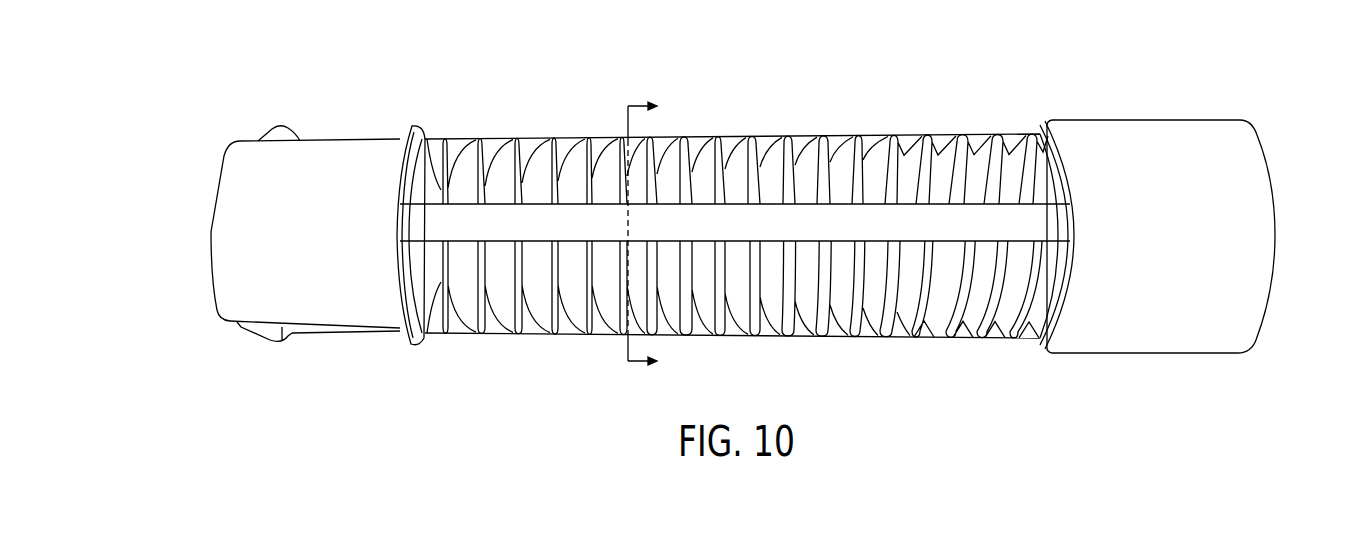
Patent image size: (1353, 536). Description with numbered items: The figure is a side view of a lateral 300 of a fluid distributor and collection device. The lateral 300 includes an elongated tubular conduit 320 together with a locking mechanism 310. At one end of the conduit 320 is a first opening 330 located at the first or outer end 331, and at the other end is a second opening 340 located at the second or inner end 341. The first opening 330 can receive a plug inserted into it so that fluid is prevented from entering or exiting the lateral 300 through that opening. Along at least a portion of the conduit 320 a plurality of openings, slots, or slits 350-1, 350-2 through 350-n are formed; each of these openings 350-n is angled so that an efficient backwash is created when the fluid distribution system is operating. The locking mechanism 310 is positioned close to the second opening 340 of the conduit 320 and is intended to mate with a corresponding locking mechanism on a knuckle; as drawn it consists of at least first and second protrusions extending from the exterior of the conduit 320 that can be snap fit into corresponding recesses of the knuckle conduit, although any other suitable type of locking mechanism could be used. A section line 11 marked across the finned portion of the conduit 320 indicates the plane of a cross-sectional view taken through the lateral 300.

The lateral 300 is at (522, 43).
The locking mechanism 310 is at (275, 125).
The elongated tubular conduit 320 is at (730, 135).
The first opening 330 is at (1288, 189).
The first or outer end 331 is at (1275, 278).
The second opening 340 is at (197, 206).
The second or inner end 341 is at (210, 277).
The opening 350-1 is at (531, 138).
The opening 350-2 is at (830, 135).
The opening 350-n is at (992, 134).
The section line 11- 11 is at (661, 234).